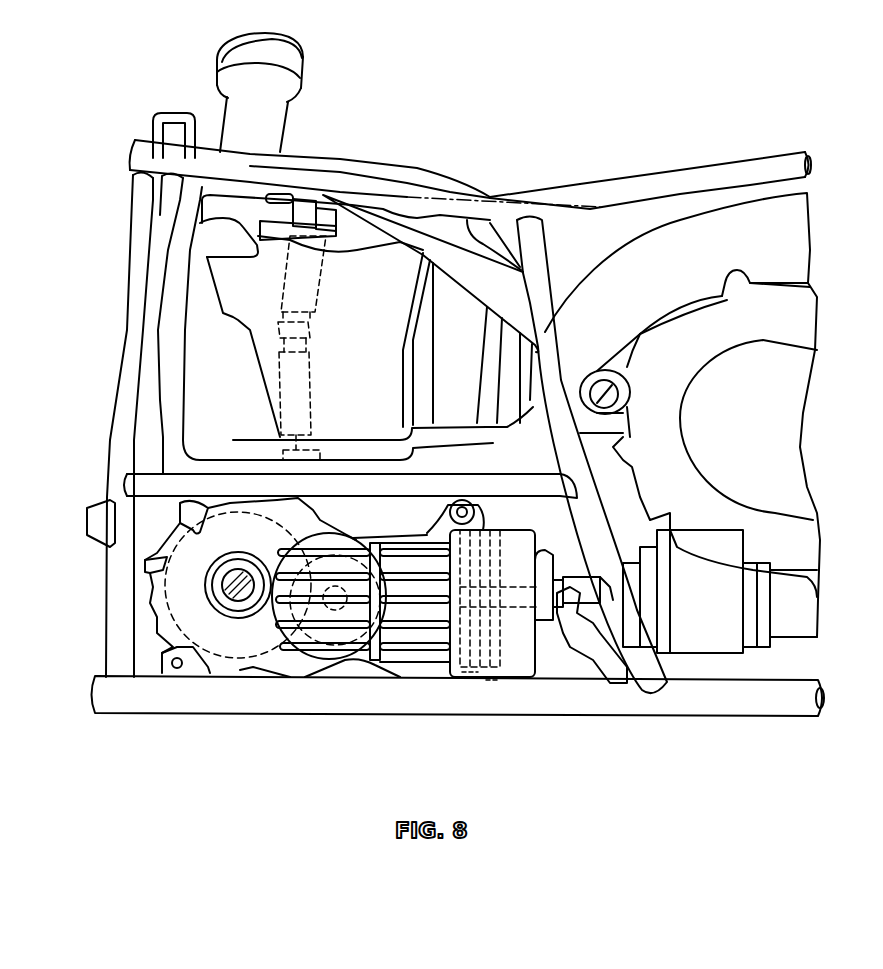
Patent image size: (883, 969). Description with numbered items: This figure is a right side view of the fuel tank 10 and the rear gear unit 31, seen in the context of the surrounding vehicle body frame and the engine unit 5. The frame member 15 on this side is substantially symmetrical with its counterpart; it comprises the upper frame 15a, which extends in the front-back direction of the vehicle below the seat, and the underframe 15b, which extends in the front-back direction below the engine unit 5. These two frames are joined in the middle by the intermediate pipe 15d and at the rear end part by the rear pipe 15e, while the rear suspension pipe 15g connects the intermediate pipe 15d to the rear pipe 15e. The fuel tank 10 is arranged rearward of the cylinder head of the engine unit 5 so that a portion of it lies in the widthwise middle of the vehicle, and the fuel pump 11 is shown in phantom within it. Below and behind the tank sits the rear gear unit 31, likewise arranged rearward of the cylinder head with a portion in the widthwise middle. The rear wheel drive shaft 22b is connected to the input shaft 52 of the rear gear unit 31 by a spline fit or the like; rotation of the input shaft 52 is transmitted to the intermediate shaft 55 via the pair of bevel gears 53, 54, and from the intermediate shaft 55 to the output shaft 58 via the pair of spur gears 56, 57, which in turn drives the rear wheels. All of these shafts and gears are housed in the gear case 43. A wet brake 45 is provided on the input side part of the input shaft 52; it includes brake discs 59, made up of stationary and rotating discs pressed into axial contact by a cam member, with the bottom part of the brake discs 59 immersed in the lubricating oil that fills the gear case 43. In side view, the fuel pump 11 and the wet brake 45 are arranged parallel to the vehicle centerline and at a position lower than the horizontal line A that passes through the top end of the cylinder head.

The engine unit 5 is at (822, 308).
The fuel tank 10 is at (181, 365).
The fuel pump 11 is at (318, 297).
The frame member 15 is at (760, 152).
The upper frame 15a is at (713, 162).
The underframe 15b is at (147, 675).
The intermediate pipe 15d is at (543, 250).
The rear pipe 15e is at (133, 312).
The rear suspension pipe 15g is at (163, 473).
The rear wheel drive shaft 22b is at (558, 597).
The rear gear unit 31 is at (147, 600).
The gear case 43 is at (423, 537).
The wet brake 45 is at (497, 530).
The input shaft 52 is at (505, 600).
The bevel gear 53 is at (393, 617).
The bevel gear 54 is at (367, 662).
The intermediate shaft 55 is at (333, 657).
The spur gear 56 is at (303, 648).
The spur gear 57 is at (262, 655).
The output shaft 58 is at (237, 600).
The brake discs 59 is at (494, 677).
The horizontal line A is at (357, 193).